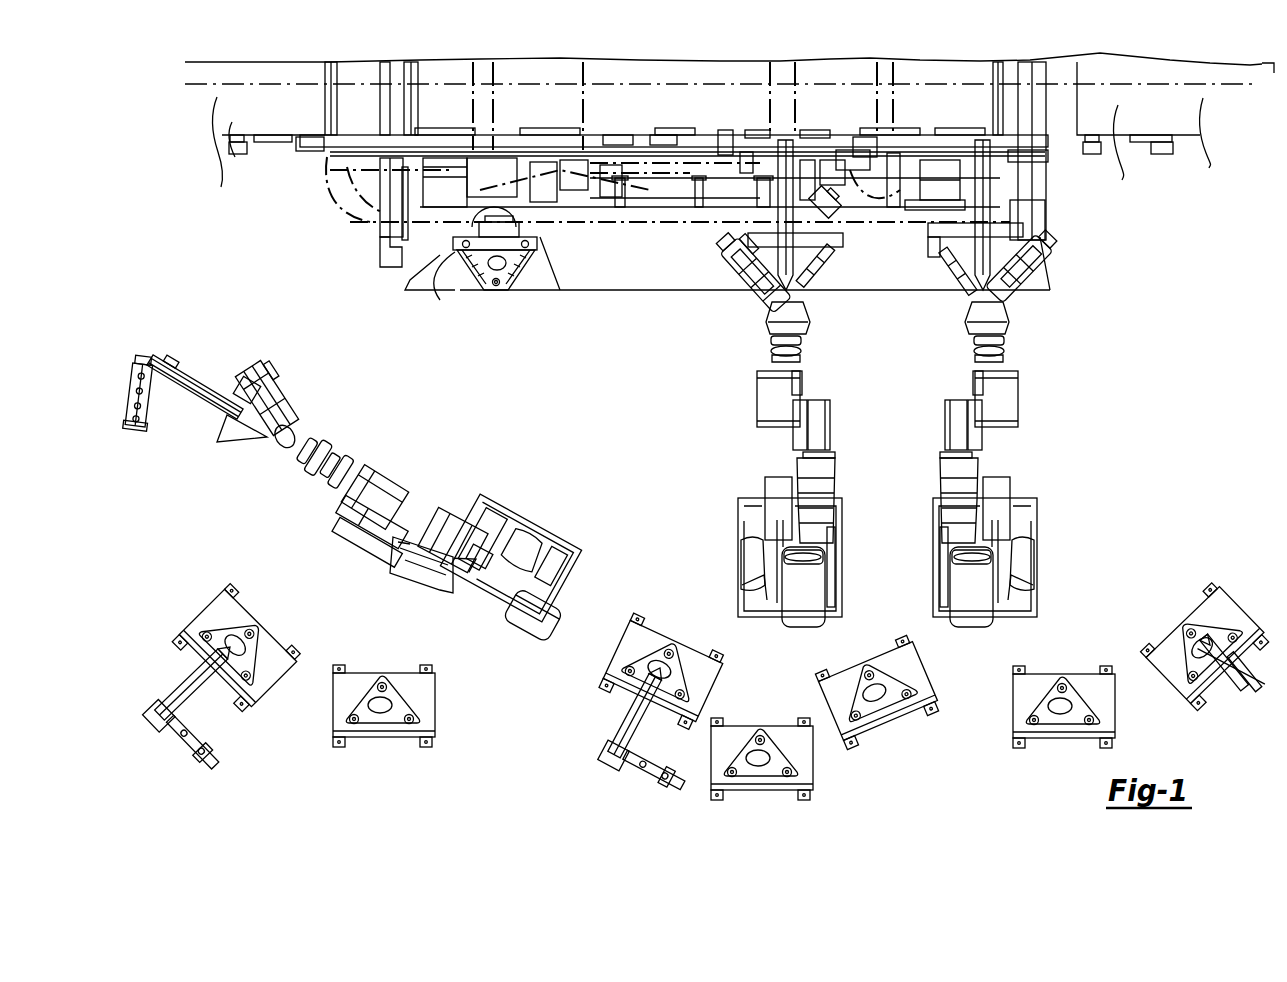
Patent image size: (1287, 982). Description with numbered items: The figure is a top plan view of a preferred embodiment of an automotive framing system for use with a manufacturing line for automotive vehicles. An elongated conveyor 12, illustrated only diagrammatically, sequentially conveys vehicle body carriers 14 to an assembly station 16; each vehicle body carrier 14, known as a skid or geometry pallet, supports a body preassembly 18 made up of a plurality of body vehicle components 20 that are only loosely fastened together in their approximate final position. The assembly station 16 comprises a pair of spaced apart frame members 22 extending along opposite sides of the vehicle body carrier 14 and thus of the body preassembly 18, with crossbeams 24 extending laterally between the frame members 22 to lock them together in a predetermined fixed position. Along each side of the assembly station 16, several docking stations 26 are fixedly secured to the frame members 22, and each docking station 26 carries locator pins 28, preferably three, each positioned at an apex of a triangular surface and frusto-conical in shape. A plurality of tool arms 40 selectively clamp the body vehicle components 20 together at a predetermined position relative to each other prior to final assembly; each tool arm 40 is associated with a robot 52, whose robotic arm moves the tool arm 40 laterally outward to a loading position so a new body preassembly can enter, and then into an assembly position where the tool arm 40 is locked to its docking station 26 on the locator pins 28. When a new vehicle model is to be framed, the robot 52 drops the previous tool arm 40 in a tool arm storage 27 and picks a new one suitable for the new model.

The conveyor 12 is at (705, 136).
The vehicle body carrier 14 is at (367, 152).
The assembly station 16 is at (656, 315).
The body preassembly 18 is at (650, 222).
The body vehicle components 20 is at (572, 262).
The frame members 22 is at (455, 258).
The crossbeams 24 is at (1032, 172).
The docking station 26 is at (472, 278).
The tool arm storage 27 is at (413, 698).
The locator pins 28 is at (488, 292).
The tool arm 40 is at (196, 376).
The robot 52 is at (520, 525).